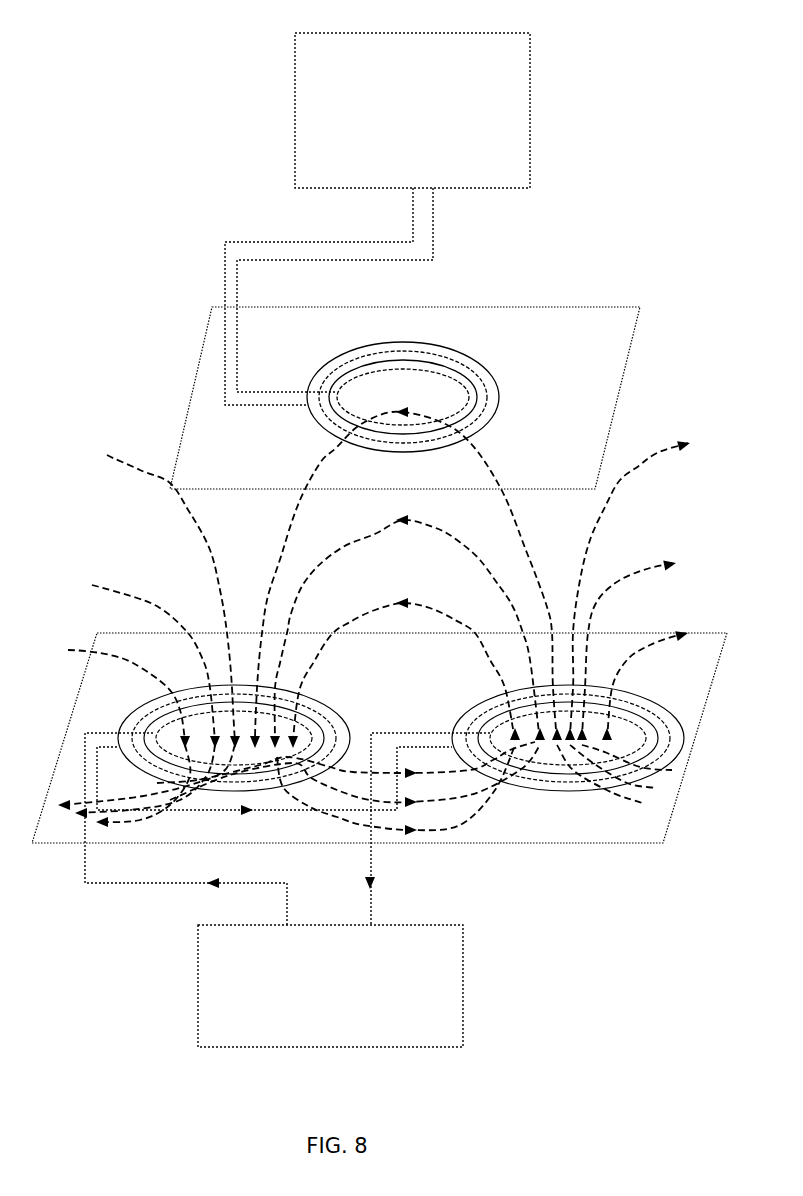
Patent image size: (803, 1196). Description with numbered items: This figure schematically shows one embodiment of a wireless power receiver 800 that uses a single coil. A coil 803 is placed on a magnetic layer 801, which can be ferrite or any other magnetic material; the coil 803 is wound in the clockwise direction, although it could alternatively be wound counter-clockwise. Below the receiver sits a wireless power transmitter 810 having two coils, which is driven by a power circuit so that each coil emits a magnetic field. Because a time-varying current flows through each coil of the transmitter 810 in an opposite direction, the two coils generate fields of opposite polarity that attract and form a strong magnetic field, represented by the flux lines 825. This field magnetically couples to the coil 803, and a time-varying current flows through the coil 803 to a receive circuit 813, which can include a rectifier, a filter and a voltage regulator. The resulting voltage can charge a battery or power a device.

The wireless power receiver 800 is at (196, 268).
The magnetic layer 801 is at (497, 307).
The coil 803 is at (425, 345).
The receive circuit 813 is at (512, 190).
The flux lines 825 is at (407, 588).
The wireless power transmitter 810 is at (546, 881).